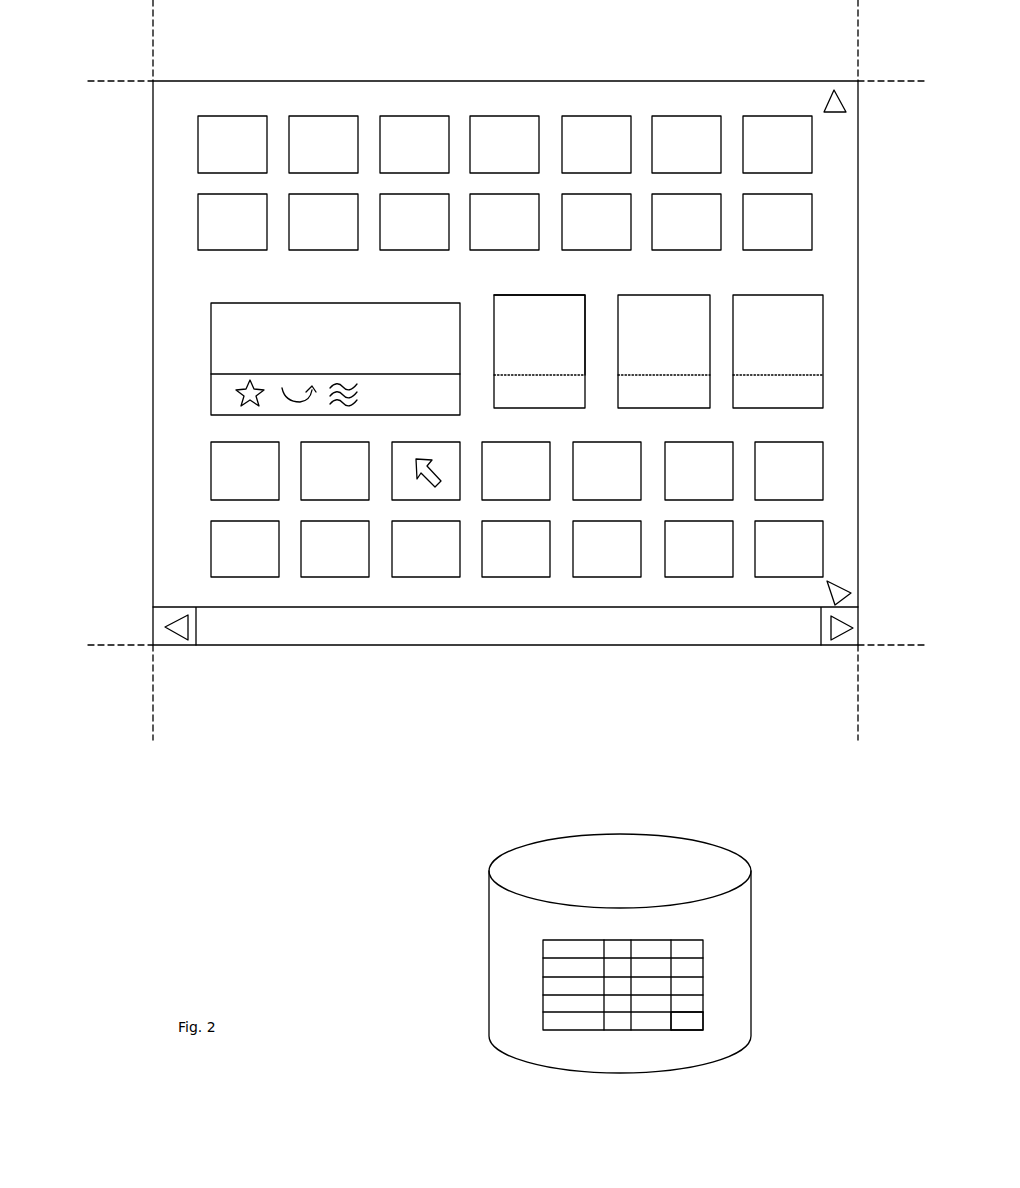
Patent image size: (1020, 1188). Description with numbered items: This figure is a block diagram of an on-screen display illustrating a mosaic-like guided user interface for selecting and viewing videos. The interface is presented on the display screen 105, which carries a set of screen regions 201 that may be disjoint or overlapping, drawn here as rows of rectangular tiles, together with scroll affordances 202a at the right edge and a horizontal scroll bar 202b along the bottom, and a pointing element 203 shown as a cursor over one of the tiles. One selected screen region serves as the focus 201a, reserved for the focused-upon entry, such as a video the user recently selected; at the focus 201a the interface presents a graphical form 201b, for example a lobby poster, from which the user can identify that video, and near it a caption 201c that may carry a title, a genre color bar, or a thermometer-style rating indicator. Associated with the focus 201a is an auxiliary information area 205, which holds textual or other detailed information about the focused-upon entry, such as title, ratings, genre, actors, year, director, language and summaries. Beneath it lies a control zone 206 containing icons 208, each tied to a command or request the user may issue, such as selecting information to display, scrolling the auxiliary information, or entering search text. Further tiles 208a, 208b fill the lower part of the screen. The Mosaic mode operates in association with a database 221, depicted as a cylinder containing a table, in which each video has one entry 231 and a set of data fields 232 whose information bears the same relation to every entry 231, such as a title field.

The display screen 105 is at (266, 100).
The screen regions 201 is at (210, 156).
The focus 201a is at (553, 313).
The graphical form 201b is at (539, 335).
The caption 201c is at (550, 381).
The scroll affordances 202a is at (847, 98).
The scroll bars 202b is at (745, 628).
The pointing element 203 is at (428, 459).
The auxiliary information area 205 is at (222, 328).
The control zone 206 is at (222, 396).
The icons 208 is at (345, 374).
The related media items 208a is at (290, 572).
The related media items row 208b is at (222, 505).
The database 221 is at (685, 868).
The entry 231 is at (710, 946).
The data fields 232 is at (699, 1027).